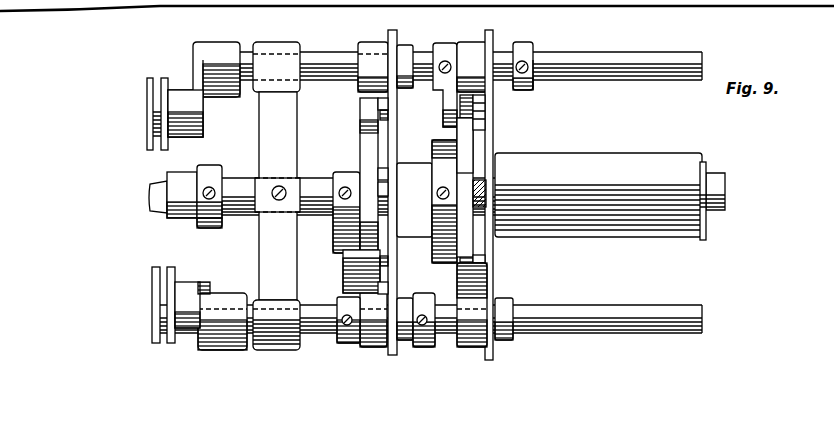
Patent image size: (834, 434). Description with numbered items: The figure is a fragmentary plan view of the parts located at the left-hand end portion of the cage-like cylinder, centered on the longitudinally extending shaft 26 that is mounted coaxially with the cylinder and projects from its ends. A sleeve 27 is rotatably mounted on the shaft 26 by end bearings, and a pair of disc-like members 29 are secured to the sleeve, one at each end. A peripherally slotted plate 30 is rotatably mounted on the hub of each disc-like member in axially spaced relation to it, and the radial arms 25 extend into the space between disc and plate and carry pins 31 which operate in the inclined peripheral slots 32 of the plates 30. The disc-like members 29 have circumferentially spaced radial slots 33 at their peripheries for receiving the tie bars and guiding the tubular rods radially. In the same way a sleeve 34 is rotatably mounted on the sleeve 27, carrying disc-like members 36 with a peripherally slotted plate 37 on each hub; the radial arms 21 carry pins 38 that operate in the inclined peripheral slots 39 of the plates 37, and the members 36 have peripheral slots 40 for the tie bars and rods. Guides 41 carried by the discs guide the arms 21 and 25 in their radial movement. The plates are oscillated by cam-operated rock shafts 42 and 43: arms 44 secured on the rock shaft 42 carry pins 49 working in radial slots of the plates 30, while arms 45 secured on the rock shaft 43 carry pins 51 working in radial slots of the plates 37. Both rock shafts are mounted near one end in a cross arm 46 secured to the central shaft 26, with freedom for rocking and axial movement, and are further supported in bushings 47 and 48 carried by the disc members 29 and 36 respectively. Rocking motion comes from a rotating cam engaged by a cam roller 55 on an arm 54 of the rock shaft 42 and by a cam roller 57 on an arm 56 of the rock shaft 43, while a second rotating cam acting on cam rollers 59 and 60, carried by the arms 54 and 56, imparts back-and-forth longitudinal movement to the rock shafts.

The radial arms 21 is at (497, 148).
The radial arms 25 is at (378, 100).
The shaft 26 is at (320, 177).
The sleeve 27 is at (405, 222).
The disc-like members 29 is at (398, 36).
The peripherally slotted plate 30 is at (360, 107).
The pins 31 is at (345, 170).
The inclined peripheral slots 32 is at (360, 125).
The radial slots 33 is at (390, 190).
The sleeve 34 is at (699, 238).
The disc-like members 36 is at (533, 88).
The peripherally slotted plate 37 is at (458, 132).
The pins 38 is at (463, 182).
The inclined peripheral slots 39 is at (462, 160).
The slots 40 is at (490, 186).
The guides 41 is at (386, 114).
The rock shaft 42 is at (322, 335).
The rock shaft 43 is at (312, 52).
The arms 44 is at (346, 292).
The arms 45 is at (443, 100).
The cross arm 46 is at (259, 248).
The bushings 47 is at (365, 42).
The bushings 48 is at (488, 42).
The pins 49 is at (345, 263).
The pins 51 is at (497, 104).
The arm 54 is at (205, 282).
The cam roller 55 is at (180, 282).
The arm 56 is at (204, 115).
The cam roller 57 is at (178, 90).
The cam roller 59 is at (152, 271).
The cam roller 60 is at (147, 83).